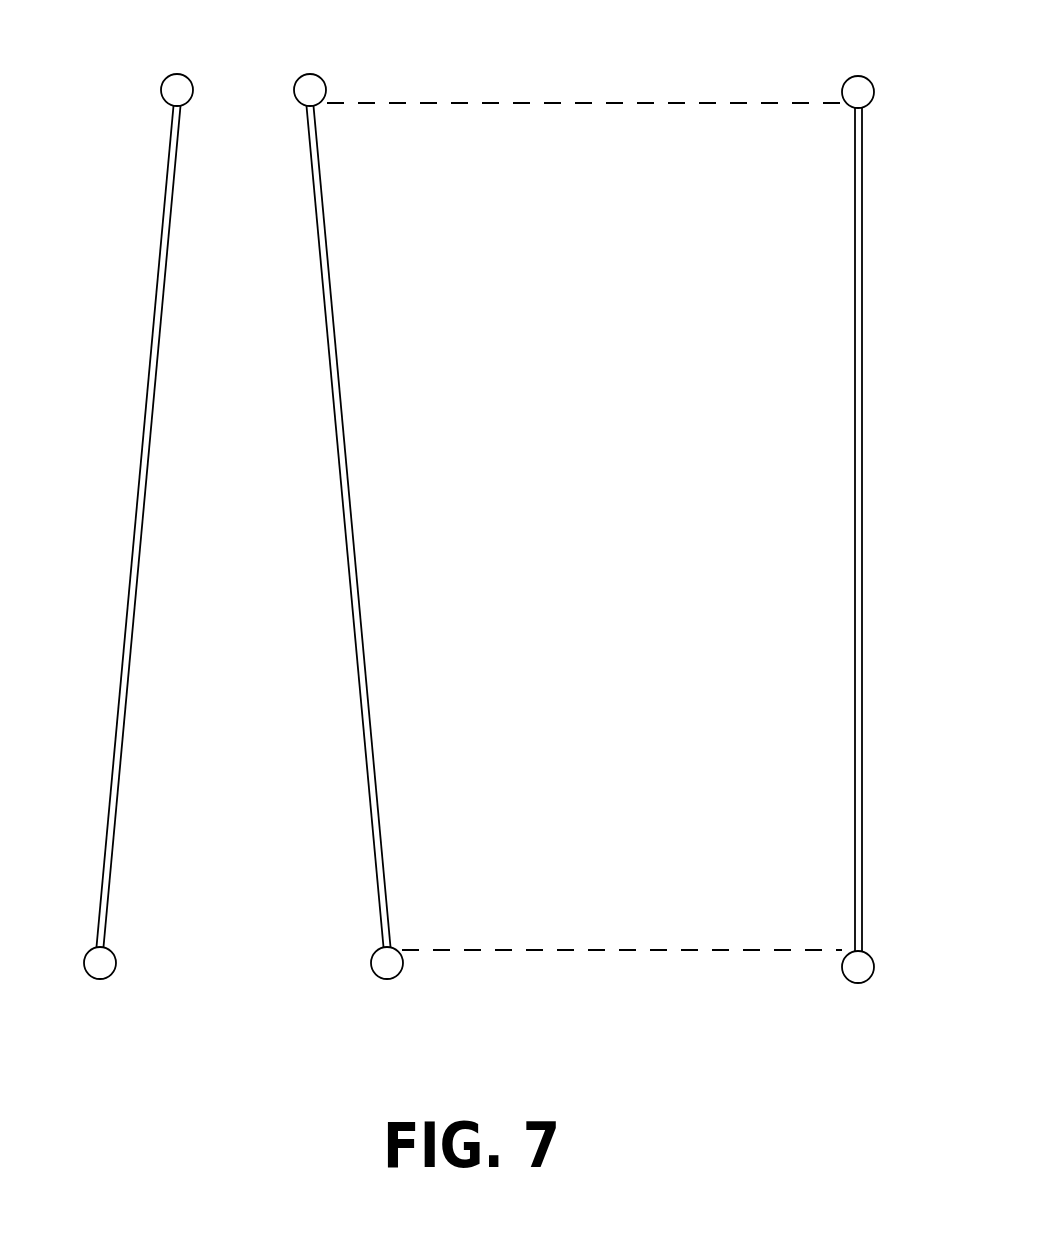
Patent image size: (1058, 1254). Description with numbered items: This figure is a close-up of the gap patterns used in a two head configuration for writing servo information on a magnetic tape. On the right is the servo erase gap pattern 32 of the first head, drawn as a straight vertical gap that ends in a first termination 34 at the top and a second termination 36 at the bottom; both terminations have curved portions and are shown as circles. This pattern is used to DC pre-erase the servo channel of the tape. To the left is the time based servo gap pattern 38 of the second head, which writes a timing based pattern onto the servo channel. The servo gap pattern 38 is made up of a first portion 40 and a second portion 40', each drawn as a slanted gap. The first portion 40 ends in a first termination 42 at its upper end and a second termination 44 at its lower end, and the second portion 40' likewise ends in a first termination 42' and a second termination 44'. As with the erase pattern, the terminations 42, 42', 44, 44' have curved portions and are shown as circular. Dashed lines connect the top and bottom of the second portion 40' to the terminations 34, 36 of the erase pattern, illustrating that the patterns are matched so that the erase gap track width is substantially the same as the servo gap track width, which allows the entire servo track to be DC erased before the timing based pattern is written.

The servo erase gap pattern 32 is at (863, 575).
The first termination 34 is at (874, 90).
The second termination 36 is at (874, 962).
The servo gap pattern 38 is at (115, 526).
The first portion 40 is at (132, 526).
The second portion 40' is at (355, 526).
The first termination 42 is at (204, 65).
The first termination 42' is at (344, 65).
The second termination 44 is at (123, 986).
The second termination 44' is at (414, 986).